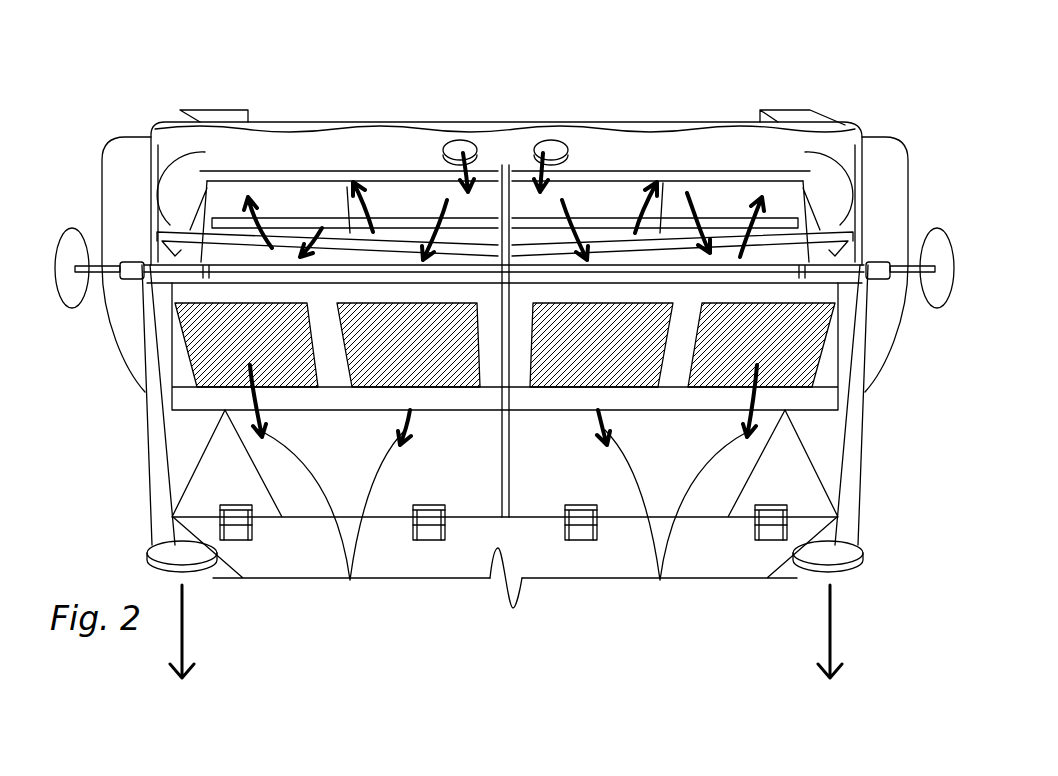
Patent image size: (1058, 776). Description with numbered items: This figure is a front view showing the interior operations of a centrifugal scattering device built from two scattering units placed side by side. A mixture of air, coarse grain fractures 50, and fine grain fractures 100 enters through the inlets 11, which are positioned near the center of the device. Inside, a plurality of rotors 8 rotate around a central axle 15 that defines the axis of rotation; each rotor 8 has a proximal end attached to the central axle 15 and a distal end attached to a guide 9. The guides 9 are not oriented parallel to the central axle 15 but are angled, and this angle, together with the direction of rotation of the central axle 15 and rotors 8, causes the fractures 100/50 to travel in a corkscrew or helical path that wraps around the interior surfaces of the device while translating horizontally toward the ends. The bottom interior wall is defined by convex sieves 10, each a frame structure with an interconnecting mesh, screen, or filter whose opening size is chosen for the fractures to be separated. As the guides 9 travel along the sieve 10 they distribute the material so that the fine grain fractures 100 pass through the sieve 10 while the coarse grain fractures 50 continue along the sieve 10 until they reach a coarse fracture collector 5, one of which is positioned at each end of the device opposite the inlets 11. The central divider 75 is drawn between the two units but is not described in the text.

The coarse fracture collector 5 is at (140, 433).
The rotor 8 is at (155, 215).
The guide 9 is at (610, 173).
The sieve 10 is at (203, 340).
The inlet 11 is at (447, 152).
The central axle 15 is at (783, 253).
The coarse grain fractures 50 is at (258, 235).
The center divider 75 is at (503, 480).
The fine grain fractures 100 is at (350, 580).